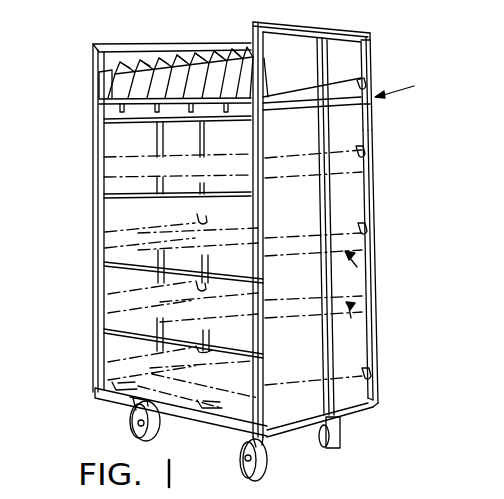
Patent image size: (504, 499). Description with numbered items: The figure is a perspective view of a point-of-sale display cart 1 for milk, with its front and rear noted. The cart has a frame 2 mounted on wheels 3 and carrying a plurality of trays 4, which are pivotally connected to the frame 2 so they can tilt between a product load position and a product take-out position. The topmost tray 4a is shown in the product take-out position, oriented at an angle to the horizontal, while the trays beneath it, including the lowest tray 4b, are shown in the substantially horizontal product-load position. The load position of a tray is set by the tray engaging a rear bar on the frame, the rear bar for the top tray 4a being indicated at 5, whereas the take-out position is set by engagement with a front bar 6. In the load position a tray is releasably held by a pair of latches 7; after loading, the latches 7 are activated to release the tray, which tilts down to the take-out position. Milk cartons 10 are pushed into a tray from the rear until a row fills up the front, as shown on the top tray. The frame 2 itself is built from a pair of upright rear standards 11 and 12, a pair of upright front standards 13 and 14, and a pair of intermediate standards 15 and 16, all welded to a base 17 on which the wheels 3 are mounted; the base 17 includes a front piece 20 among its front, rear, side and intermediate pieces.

The point-of-sale display cart 1 is at (250, 243).
The frame 2 is at (374, 196).
The wheels 3 is at (349, 432).
The trays 4 is at (339, 218).
The topmost tray 4a is at (380, 51).
The lower rear frame portion 4b is at (386, 408).
The rear bar 5 is at (368, 120).
The front bar 6 is at (104, 199).
The latches 7 is at (367, 82).
The cartons 10 is at (103, 86).
The upright rear standard 11 is at (401, 13).
The upright rear standard 12 is at (207, 135).
The upright front standard 13 is at (258, 170).
The upright front standard 14 is at (104, 143).
The intermediate standard 15 is at (318, 195).
The intermediate standard 16 is at (169, 202).
The base 17 is at (286, 430).
The front piece 20 is at (112, 400).